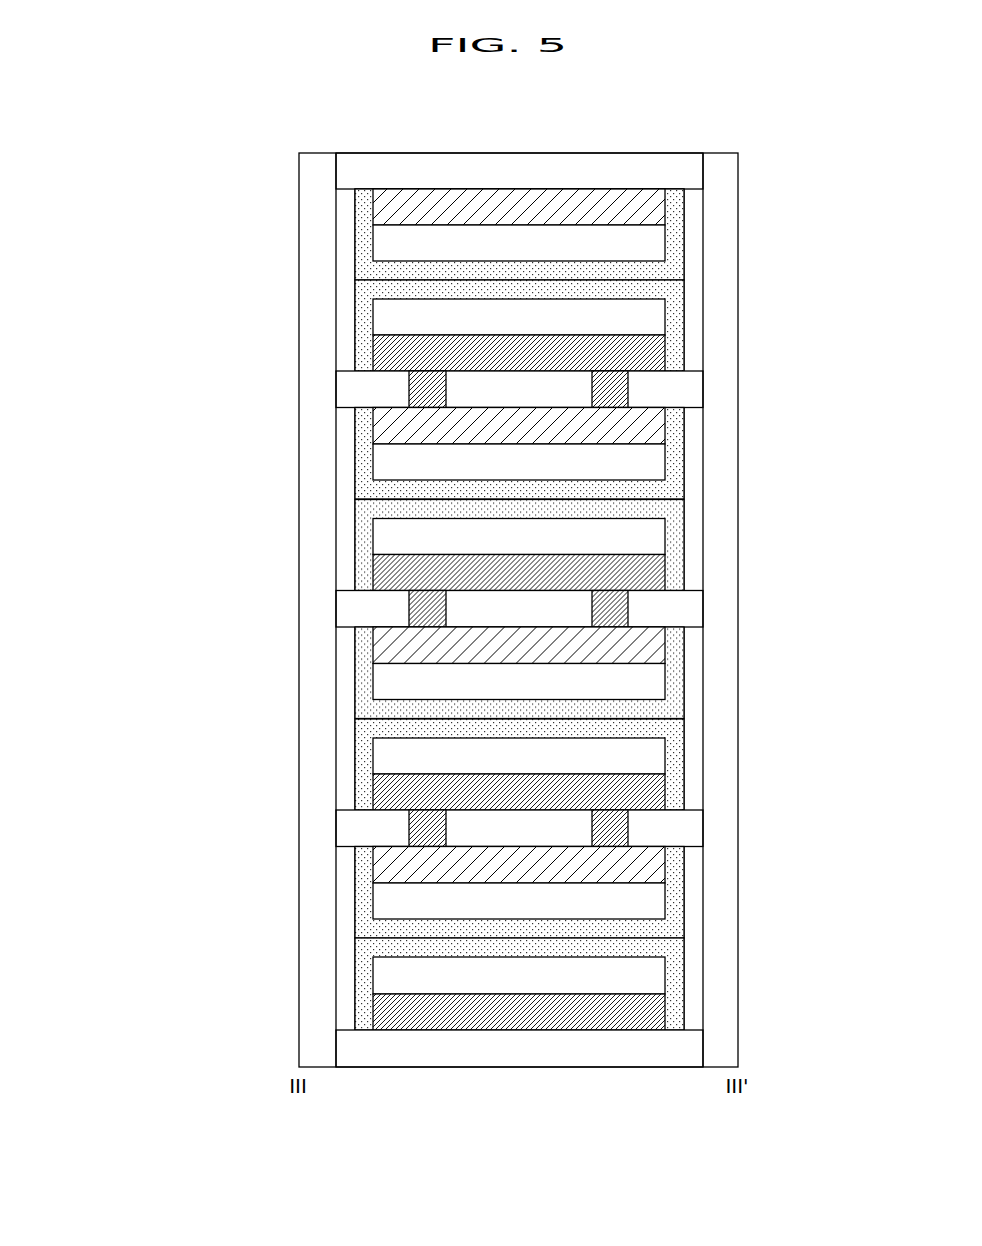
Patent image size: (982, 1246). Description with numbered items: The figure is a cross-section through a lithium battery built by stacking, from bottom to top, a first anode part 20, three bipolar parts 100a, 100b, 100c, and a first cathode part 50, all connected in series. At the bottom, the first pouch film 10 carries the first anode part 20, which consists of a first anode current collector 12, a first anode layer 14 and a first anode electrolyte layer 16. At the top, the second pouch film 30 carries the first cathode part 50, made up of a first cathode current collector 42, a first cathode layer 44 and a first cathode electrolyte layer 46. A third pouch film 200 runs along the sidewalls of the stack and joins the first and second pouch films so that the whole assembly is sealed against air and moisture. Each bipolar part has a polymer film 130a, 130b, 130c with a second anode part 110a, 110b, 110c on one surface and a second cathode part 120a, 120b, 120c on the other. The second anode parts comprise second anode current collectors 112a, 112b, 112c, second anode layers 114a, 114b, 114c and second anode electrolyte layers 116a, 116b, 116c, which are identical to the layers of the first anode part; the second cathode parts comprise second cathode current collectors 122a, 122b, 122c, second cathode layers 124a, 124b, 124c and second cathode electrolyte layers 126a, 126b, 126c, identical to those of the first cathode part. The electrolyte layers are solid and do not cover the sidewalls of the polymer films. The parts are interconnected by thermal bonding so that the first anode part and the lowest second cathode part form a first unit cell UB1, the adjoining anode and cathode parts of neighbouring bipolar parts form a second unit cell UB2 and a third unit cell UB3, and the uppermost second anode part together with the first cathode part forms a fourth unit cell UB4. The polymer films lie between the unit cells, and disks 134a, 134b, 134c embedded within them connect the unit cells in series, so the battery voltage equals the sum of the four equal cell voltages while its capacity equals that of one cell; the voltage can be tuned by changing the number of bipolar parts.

The first pouch film 10 is at (349, 1049).
The first anode current collector 12 is at (380, 1014).
The first anode layer 14 is at (380, 984).
The first anode electrolyte layer 16 is at (380, 952).
The first anode part 20 is at (429, 984).
The second pouch film 30 is at (349, 174).
The first cathode current collector 42 is at (380, 209).
The first cathode layer 44 is at (380, 239).
The first cathode electrolyte layer 46 is at (368, 269).
The first cathode part 50 is at (429, 236).
The first bipolar part 100a is at (450, 833).
The second bipolar part 100b is at (450, 614).
The third bipolar part 100c is at (449, 394).
The second anode part of the first bipolar part 110a is at (418, 764).
The second anode part of the second bipolar part 110b is at (418, 545).
The second anode part of the third bipolar part 110c is at (418, 325).
The second anode current collector of the first bipolar part 112a is at (440, 792).
The second anode current collector of the second bipolar part 112b is at (440, 573).
The second anode current collector of the third bipolar part 112c is at (380, 355).
The second anode layer of the first bipolar part 114a is at (440, 758).
The second anode layer of the second bipolar part 114b is at (440, 539).
The second anode layer of the third bipolar part 114c is at (380, 325).
The second anode electrolyte layer of the first bipolar part 116a is at (449, 764).
The second anode electrolyte layer of the second bipolar part 116b is at (449, 545).
The second anode electrolyte layer of the third bipolar part 116c is at (368, 294).
The second cathode part of the first bipolar part 120a is at (418, 898).
The second cathode part of the second bipolar part 120b is at (418, 678).
The second cathode part of the third bipolar part 120c is at (418, 459).
The second cathode current collector of the first bipolar part 122a is at (440, 868).
The second cathode current collector of the second bipolar part 122b is at (440, 648).
The second cathode current collector of the third bipolar part 122c is at (380, 434).
The second cathode layer of the first bipolar part 124a is at (440, 901).
The second cathode layer of the second bipolar part 124b is at (440, 682).
The second cathode layer of the third bipolar part 124c is at (380, 464).
The second cathode electrolyte layer of the first bipolar part 126a is at (449, 898).
The second cathode electrolyte layer of the second bipolar part 126b is at (449, 678).
The second cathode electrolyte layer of the third bipolar part 126c is at (368, 494).
The polymer film of the first bipolar part 130a is at (427, 828).
The polymer film of the second bipolar part 130b is at (427, 609).
The polymer film of the third bipolar part 130c is at (348, 395).
The disk 134a is at (617, 828).
The disk 134b is at (617, 609).
The disk 134c is at (617, 390).
The third pouch film 200 is at (730, 1043).
The first unit cell UB1 is at (139, 905).
The second unit cell UB2 is at (139, 686).
The third unit cell UB3 is at (139, 467).
The fourth unit cell UB4 is at (384, 280).